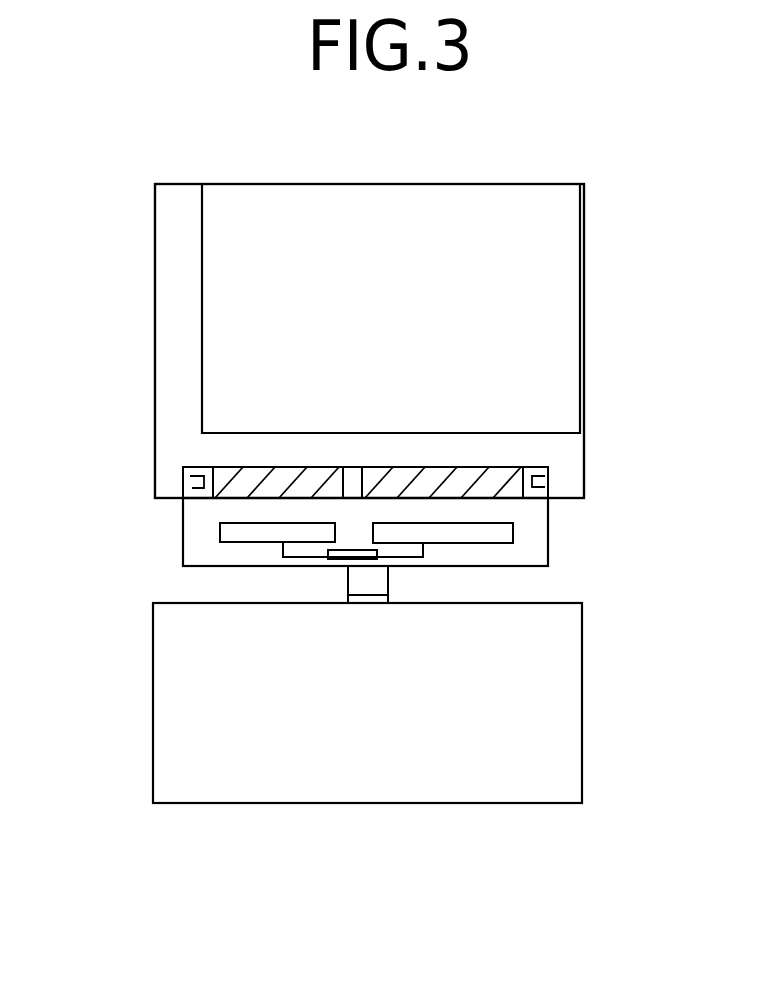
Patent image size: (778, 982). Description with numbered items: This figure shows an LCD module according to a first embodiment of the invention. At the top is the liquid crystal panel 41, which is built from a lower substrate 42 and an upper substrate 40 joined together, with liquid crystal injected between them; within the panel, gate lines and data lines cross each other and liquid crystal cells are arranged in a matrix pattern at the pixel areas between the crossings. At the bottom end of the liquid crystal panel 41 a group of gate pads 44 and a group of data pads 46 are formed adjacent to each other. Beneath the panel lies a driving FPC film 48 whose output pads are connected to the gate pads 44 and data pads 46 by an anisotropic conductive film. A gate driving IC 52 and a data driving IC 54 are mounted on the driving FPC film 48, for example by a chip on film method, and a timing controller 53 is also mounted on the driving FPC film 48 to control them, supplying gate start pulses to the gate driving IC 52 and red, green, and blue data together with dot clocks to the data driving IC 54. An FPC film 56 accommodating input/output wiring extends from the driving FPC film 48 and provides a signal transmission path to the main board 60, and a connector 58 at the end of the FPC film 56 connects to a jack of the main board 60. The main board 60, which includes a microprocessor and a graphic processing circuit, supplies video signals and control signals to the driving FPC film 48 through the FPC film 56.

The upper substrate 40 is at (202, 293).
The liquid crystal panel 41 is at (131, 239).
The lower substrate 42 is at (155, 360).
The gate pads 44 is at (192, 482).
The data pads 46 is at (548, 484).
The driving FPC film 48 is at (540, 518).
The gate driving IC 52 is at (226, 534).
The timing controller 53 is at (378, 560).
The data driving IC 54 is at (500, 540).
The FPC film 56 is at (358, 588).
The connector 58 is at (355, 600).
The main board 60 is at (158, 697).